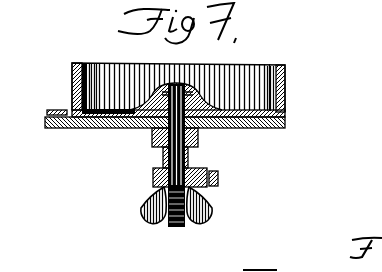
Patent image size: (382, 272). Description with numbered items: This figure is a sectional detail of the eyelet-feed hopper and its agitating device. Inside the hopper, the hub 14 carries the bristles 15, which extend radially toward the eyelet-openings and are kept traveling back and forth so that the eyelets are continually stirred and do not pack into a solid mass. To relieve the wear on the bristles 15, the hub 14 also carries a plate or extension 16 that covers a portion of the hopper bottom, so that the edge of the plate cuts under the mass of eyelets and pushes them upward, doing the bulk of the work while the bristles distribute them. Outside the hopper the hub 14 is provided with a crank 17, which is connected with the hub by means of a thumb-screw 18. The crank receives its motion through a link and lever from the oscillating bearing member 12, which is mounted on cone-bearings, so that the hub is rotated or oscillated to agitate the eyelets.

The oscillating bearing member 12 is at (231, 72).
The hub 14 is at (133, 109).
The bristles 15 is at (88, 128).
The plate or extension 16 is at (285, 112).
The crank 17 is at (219, 179).
The thumb-screw 18 is at (209, 214).